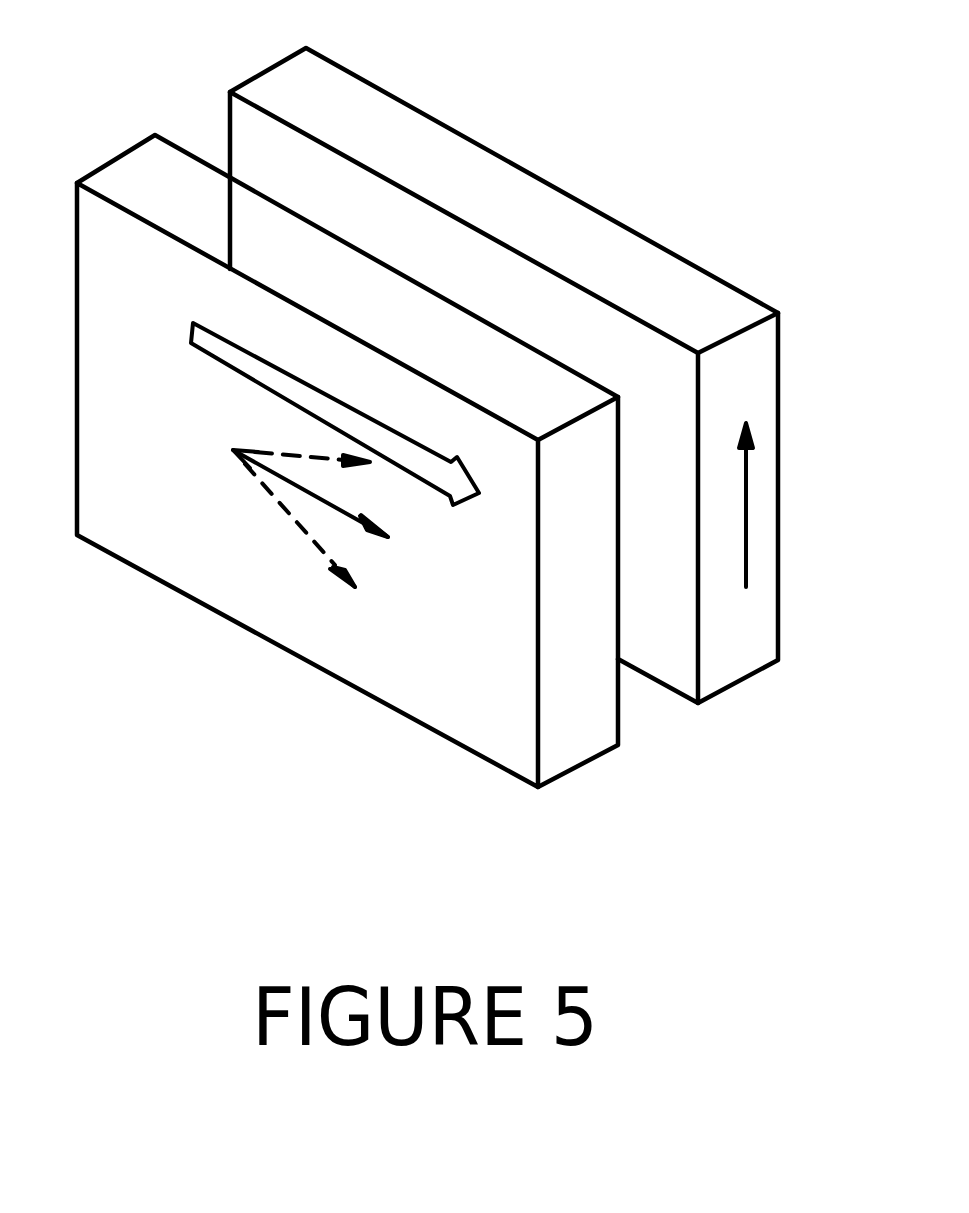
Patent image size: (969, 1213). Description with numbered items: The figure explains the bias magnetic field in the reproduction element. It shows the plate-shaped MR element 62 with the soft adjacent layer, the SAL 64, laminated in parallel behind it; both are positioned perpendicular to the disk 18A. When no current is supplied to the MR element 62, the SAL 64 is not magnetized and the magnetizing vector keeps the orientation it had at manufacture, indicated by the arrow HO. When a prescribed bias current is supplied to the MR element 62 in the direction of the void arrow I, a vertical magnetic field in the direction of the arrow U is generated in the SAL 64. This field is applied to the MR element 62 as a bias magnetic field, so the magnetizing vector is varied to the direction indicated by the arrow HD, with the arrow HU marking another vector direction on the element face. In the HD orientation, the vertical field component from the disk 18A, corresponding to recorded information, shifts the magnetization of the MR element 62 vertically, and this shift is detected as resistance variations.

The MR element 62 is at (128, 152).
The soft adjacent layer (SAL) 64 is at (255, 78).
The disk 18A is at (280, 767).
The bias current arrow I is at (210, 330).
The magnetizing vector direction HU is at (265, 452).
The biased magnetizing vector direction HD is at (289, 511).
The initial magnetizing vector direction HO is at (347, 516).
The vertical magnetic field arrow U is at (746, 530).